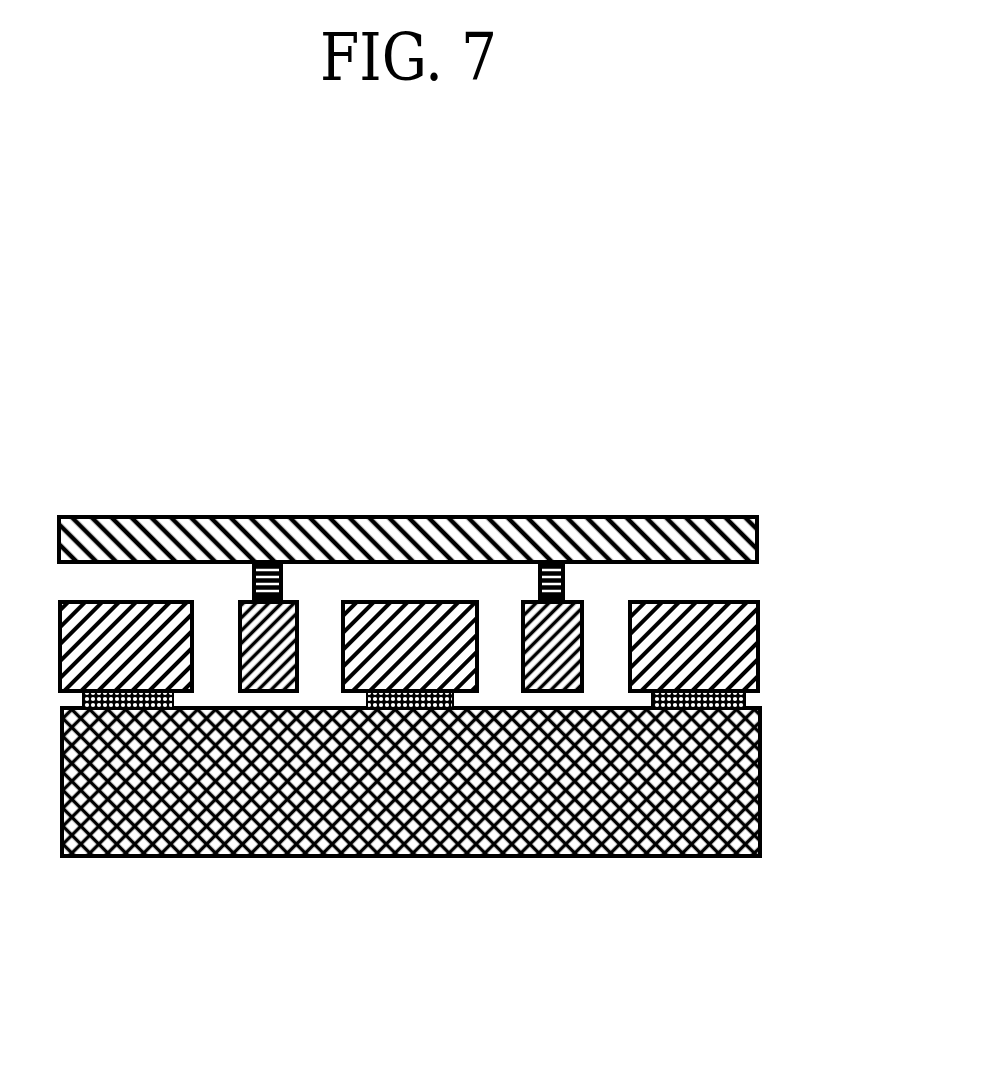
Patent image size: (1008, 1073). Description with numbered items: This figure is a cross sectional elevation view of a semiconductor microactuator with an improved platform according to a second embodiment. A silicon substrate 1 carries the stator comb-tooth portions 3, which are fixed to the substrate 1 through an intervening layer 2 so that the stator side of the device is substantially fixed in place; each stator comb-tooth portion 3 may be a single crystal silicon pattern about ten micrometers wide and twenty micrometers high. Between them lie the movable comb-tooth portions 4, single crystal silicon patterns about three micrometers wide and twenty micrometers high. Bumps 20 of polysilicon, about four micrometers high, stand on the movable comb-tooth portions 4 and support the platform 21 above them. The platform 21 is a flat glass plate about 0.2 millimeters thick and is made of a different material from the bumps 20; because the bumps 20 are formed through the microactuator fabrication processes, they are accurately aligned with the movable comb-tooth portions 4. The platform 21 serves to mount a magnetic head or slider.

The silicon substrate 1 is at (730, 783).
The bonding layer 2 is at (743, 697).
The stator comb-tooth portion 3 is at (127, 637).
The movable comb-tooth portion 4 is at (557, 692).
The bump 20 is at (258, 562).
The platform 21 is at (729, 523).